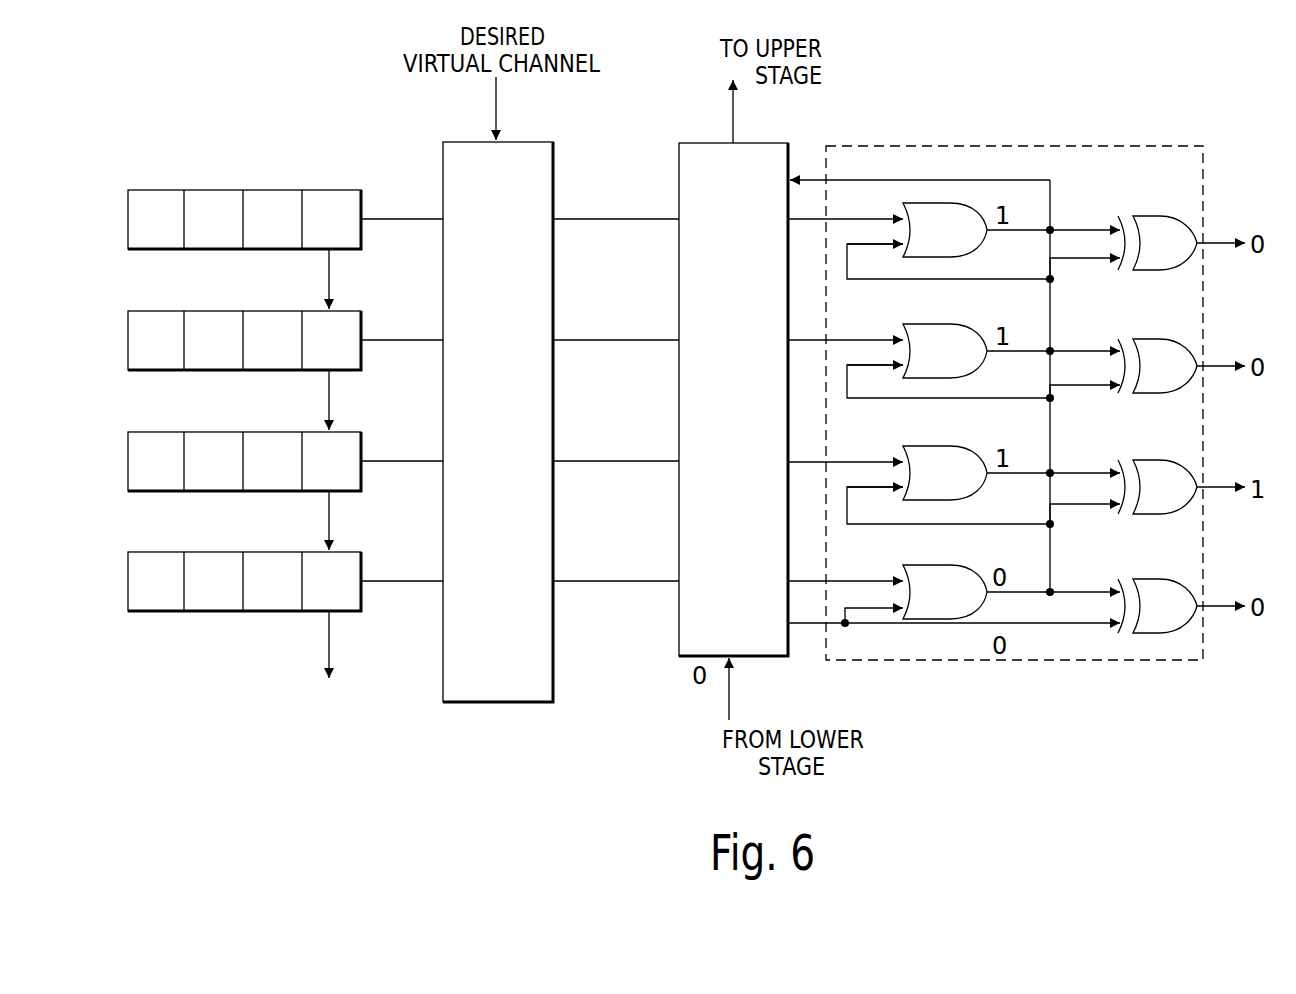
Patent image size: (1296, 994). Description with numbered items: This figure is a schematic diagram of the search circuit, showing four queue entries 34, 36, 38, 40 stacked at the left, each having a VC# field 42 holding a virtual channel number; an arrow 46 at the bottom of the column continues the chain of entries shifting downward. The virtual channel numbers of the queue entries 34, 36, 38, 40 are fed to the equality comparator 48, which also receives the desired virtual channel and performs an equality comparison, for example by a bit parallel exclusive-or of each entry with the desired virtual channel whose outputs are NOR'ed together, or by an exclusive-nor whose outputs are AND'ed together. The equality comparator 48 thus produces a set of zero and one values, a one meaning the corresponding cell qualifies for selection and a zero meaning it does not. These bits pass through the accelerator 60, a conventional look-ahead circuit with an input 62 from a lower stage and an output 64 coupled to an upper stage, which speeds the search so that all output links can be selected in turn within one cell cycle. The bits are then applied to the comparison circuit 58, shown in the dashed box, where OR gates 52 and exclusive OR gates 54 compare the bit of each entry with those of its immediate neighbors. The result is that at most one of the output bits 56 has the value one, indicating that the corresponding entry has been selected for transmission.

The queue entry 34 is at (215, 200).
The queue entry 36 is at (128, 332).
The queue entry 38 is at (128, 456).
The queue entry 40 is at (128, 578).
The VC# field 42 is at (155, 203).
The shift output 46 is at (348, 636).
The equality comparator 48 is at (537, 740).
The OR gates 52 is at (968, 546).
The exclusive OR gates 54 is at (1162, 558).
The output bits 56 is at (1262, 595).
The comparison circuit 58 is at (1080, 146).
The accelerator 60 is at (678, 645).
The input from lower stage 62 is at (731, 703).
The output to upper stage 64 is at (733, 123).